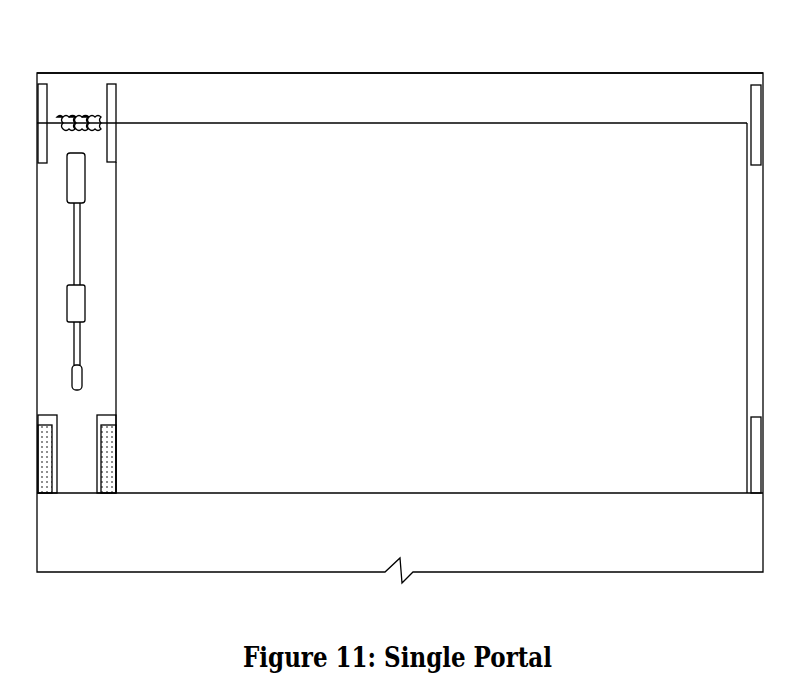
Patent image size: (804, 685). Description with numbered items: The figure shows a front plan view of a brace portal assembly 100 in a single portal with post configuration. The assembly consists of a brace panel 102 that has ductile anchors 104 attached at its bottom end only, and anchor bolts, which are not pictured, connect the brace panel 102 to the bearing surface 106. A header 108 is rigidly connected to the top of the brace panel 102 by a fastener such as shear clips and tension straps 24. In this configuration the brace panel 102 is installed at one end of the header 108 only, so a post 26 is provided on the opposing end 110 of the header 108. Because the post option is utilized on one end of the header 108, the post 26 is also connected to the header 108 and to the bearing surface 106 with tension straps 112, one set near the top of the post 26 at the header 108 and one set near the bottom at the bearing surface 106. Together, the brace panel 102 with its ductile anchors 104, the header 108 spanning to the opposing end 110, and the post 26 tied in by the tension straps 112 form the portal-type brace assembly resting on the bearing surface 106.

The shear clips and tension straps 24 is at (118, 138).
The post 26 is at (740, 375).
The brace portal assembly 100 is at (532, 585).
The brace panel 102 is at (123, 271).
The ductile anchors 104 is at (48, 443).
The bearing surface 106 is at (375, 527).
The header 108 is at (418, 90).
The opposing end 110 is at (722, 80).
The tension straps 112 is at (750, 152).